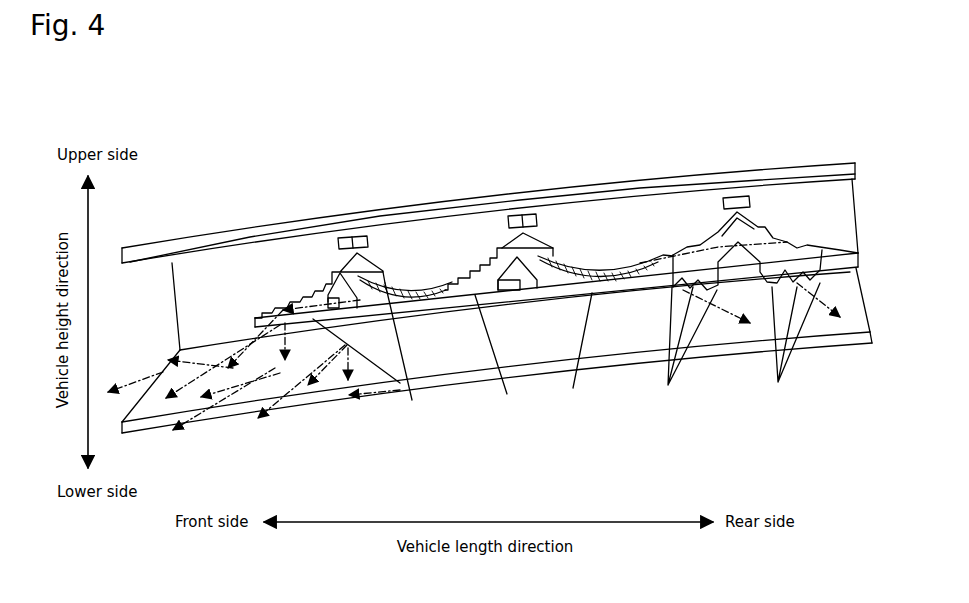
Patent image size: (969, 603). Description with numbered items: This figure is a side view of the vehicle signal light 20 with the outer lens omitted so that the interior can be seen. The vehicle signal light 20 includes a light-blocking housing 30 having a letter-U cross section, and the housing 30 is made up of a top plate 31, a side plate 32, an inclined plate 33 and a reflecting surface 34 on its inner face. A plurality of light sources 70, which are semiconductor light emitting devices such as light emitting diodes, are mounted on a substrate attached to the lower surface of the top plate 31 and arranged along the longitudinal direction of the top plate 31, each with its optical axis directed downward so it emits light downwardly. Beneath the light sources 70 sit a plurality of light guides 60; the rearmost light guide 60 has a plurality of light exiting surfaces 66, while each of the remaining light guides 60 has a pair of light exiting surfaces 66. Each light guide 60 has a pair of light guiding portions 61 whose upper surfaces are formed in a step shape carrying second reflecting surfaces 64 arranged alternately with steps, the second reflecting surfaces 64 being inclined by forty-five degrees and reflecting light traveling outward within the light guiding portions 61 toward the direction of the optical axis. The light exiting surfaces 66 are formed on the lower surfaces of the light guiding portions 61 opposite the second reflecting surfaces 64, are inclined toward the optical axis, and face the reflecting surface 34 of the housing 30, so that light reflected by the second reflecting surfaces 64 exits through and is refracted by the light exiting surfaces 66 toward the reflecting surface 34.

The vehicle signal light 20 is at (260, 103).
The housing 30 is at (256, 219).
The top plate 31 is at (217, 235).
The side plate 32 is at (185, 313).
The inclined plate 33 is at (162, 380).
The reflecting surface 34 is at (448, 358).
The light guide 60 is at (390, 281).
The light guiding portion 61 is at (558, 273).
The second reflecting surface 64 is at (683, 270).
The light exiting surface 66 is at (602, 355).
The light source 70 is at (343, 237).